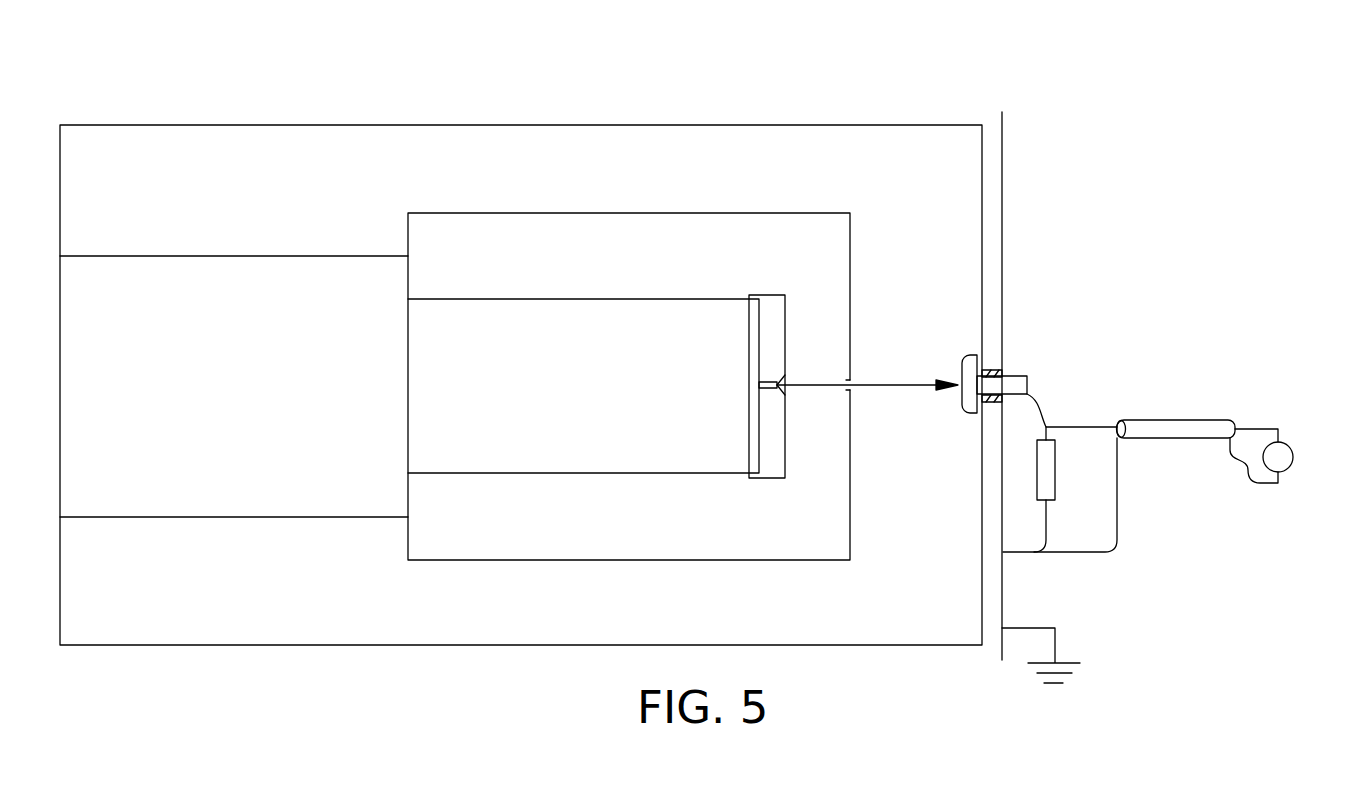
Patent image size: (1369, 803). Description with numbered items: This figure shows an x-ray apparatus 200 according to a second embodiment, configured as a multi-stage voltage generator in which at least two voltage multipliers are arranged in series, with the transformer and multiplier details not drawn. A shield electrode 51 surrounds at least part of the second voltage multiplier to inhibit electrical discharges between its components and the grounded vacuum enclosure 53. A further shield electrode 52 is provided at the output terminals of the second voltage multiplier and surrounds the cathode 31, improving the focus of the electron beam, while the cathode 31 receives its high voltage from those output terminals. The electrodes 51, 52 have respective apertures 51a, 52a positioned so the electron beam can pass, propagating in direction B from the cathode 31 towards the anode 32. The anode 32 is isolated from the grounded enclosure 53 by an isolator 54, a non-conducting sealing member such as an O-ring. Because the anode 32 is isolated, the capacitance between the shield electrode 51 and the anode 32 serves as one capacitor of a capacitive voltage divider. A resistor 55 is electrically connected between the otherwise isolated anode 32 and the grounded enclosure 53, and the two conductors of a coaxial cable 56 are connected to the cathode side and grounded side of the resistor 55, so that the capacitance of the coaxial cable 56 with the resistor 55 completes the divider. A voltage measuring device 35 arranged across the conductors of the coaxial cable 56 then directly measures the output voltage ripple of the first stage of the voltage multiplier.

The beam measurement system 200 is at (1009, 68).
The shield electrode 51 is at (704, 212).
The aperture 51a is at (851, 389).
The further shield electrode 52 is at (769, 295).
The aperture 52a is at (781, 377).
The cathode 31 is at (781, 393).
The direction of electron beam propagation B is at (867, 375).
The grounded vacuum enclosure 53 is at (1002, 212).
The isolator 54 is at (1003, 372).
The anode 32 is at (1028, 381).
The resistor 55 is at (1056, 468).
The coaxial cable 56 is at (1178, 420).
The voltage measuring device 35 is at (1293, 459).